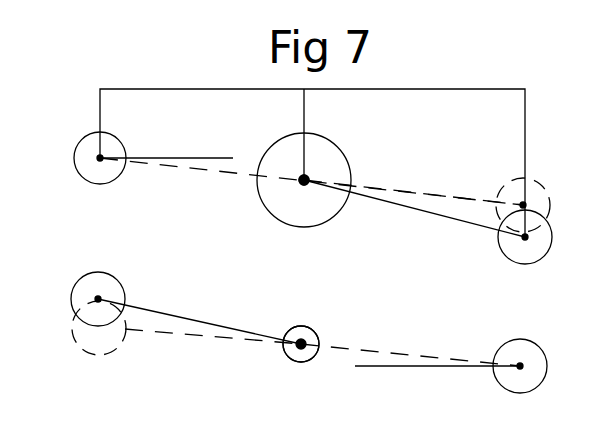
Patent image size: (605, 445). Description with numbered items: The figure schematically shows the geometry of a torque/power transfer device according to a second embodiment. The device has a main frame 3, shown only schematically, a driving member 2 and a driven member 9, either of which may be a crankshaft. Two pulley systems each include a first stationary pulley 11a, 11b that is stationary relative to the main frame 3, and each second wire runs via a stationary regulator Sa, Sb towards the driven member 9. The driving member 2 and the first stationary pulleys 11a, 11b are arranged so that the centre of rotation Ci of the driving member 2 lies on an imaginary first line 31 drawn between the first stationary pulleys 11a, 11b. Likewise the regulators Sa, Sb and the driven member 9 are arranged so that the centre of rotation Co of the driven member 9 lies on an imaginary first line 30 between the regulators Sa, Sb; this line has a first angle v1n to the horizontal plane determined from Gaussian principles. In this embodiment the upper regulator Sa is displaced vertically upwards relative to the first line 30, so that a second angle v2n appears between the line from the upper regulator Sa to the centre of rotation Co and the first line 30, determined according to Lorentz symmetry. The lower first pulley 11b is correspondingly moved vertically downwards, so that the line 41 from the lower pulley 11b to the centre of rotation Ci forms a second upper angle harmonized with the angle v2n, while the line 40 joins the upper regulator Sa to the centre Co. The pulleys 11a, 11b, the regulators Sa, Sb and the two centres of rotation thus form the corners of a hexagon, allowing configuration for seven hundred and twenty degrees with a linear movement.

The driving member 2 is at (334, 140).
The main frame 3 is at (177, 88).
The driven member 9 is at (290, 362).
The first stationary pulley 11a is at (80, 140).
The lower first stationary pulley 11b is at (498, 248).
The imaginary first line 30 is at (365, 347).
The imaginary first line 31 is at (430, 192).
The connecting line output side 40 is at (167, 313).
The connecting line input side 41 is at (432, 217).
The centre of rotation for the driving member Ci is at (304, 180).
The centre of rotation for the driven member Co is at (300, 333).
The upper regulator Sa is at (78, 283).
The regulator Sb is at (525, 340).
The first angle v1n is at (422, 357).
The second angle v2n is at (173, 316).